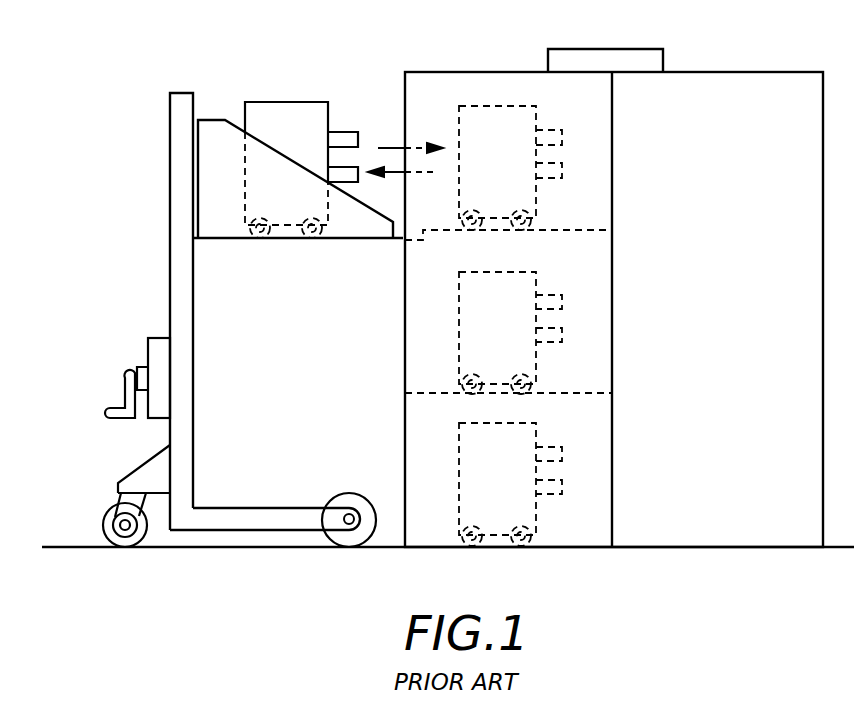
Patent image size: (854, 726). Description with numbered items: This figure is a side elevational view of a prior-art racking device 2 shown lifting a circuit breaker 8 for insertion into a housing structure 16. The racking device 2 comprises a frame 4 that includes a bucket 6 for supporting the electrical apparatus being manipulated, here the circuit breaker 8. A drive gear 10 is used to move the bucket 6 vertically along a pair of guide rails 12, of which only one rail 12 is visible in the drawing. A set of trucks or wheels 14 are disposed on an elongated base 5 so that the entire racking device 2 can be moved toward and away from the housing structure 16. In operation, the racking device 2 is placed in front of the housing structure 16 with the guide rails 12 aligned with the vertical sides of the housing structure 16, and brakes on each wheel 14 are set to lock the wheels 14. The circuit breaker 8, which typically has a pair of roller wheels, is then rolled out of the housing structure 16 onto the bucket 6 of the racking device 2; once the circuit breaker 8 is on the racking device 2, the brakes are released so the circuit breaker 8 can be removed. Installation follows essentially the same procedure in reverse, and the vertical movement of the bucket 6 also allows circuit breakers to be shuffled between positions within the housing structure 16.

The racking device 2 is at (130, 229).
The frame 4 is at (218, 512).
The elongated base 5 is at (240, 546).
The bucket 6 is at (228, 120).
The circuit breaker 8 is at (288, 102).
The drive gear 10 is at (148, 340).
The guide rails 12 is at (170, 122).
The wheels 14 is at (108, 512).
The housing structure 16 is at (733, 72).